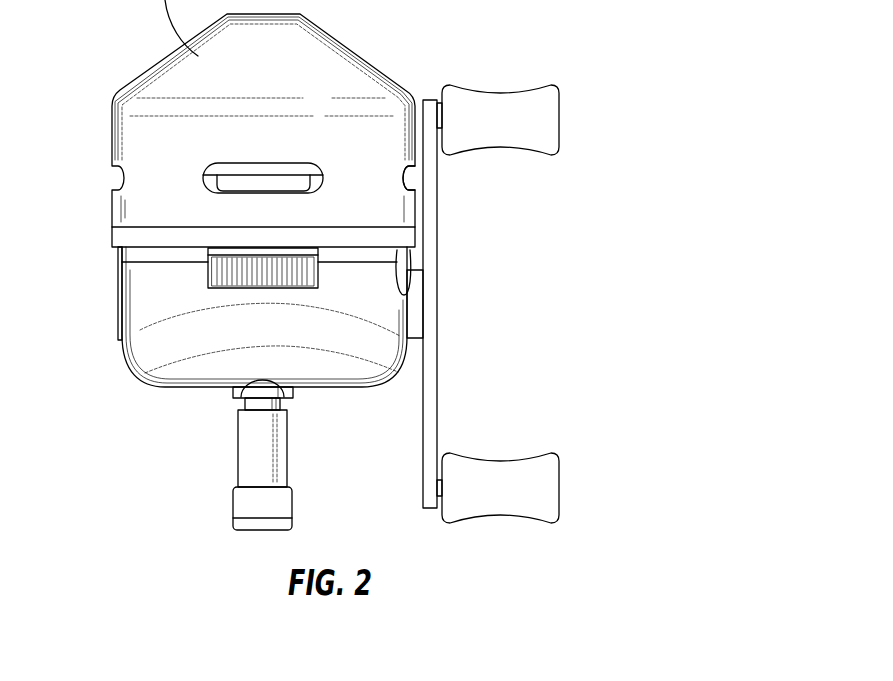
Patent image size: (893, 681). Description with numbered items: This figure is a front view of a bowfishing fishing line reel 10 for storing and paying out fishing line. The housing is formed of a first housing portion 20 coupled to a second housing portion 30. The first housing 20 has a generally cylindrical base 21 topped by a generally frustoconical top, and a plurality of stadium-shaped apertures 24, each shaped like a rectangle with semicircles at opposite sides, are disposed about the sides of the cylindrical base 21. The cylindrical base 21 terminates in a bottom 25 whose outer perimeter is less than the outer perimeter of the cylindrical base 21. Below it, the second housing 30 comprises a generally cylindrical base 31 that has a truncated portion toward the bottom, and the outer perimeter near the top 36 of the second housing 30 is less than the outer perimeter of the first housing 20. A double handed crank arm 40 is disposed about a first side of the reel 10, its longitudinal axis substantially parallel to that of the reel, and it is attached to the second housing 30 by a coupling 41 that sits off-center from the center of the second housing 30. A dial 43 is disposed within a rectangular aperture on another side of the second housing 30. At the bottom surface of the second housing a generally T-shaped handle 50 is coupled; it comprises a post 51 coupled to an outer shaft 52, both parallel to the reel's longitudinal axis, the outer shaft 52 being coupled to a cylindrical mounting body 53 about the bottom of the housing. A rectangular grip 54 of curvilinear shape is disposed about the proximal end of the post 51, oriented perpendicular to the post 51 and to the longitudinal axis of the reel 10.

The fishing line reel 10 is at (642, 310).
The first housing portion 20 is at (90, 110).
The cylindrical base 21 is at (114, 139).
The stadium-shaped apertures 24 is at (411, 178).
The bottom 25 is at (113, 233).
The second housing portion 30 is at (115, 353).
The cylindrical base 31 is at (140, 294).
The top 36 is at (118, 256).
The double handed crank arm 40 is at (433, 283).
The coupling 41 is at (413, 318).
The dial 43 is at (318, 283).
The handle 50 is at (204, 459).
The post 51 is at (272, 466).
The outer shaft 52 is at (281, 405).
The cylindrical mounting body 53 is at (241, 391).
The rectangular grip 54 is at (243, 506).